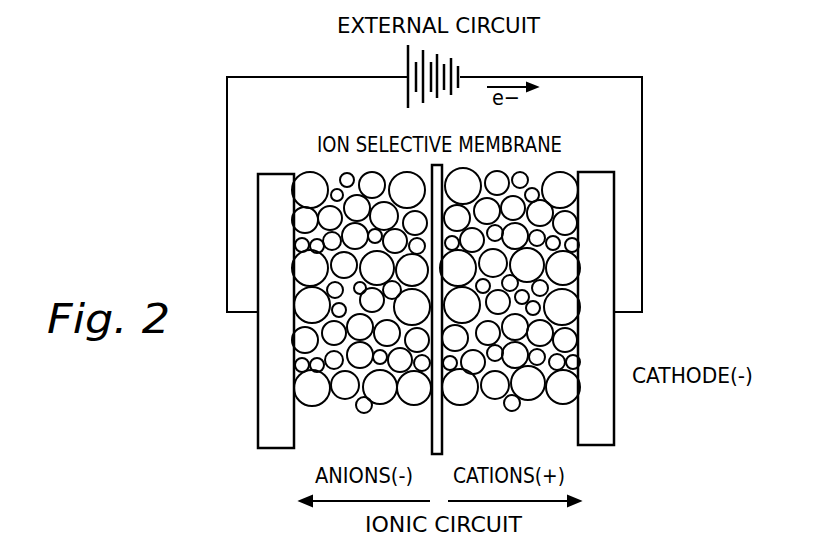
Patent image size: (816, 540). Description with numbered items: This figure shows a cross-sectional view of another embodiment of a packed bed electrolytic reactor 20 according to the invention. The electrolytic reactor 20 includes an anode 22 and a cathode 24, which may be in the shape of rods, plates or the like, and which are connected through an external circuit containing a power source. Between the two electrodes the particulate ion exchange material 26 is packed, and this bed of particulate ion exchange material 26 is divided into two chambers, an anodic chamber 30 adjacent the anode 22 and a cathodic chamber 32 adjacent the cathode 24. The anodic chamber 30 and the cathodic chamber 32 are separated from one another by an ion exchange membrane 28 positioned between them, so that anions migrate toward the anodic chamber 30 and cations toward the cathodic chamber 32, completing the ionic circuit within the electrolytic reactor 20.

The electrolytic reactor 20 is at (687, 163).
The anode 22 is at (278, 418).
The cathode 24 is at (608, 416).
The particulate ion exchange material 26 is at (306, 178).
The ion exchange membrane 28 is at (445, 438).
The anodic chamber 30 is at (348, 446).
The cathodic chamber 32 is at (556, 442).